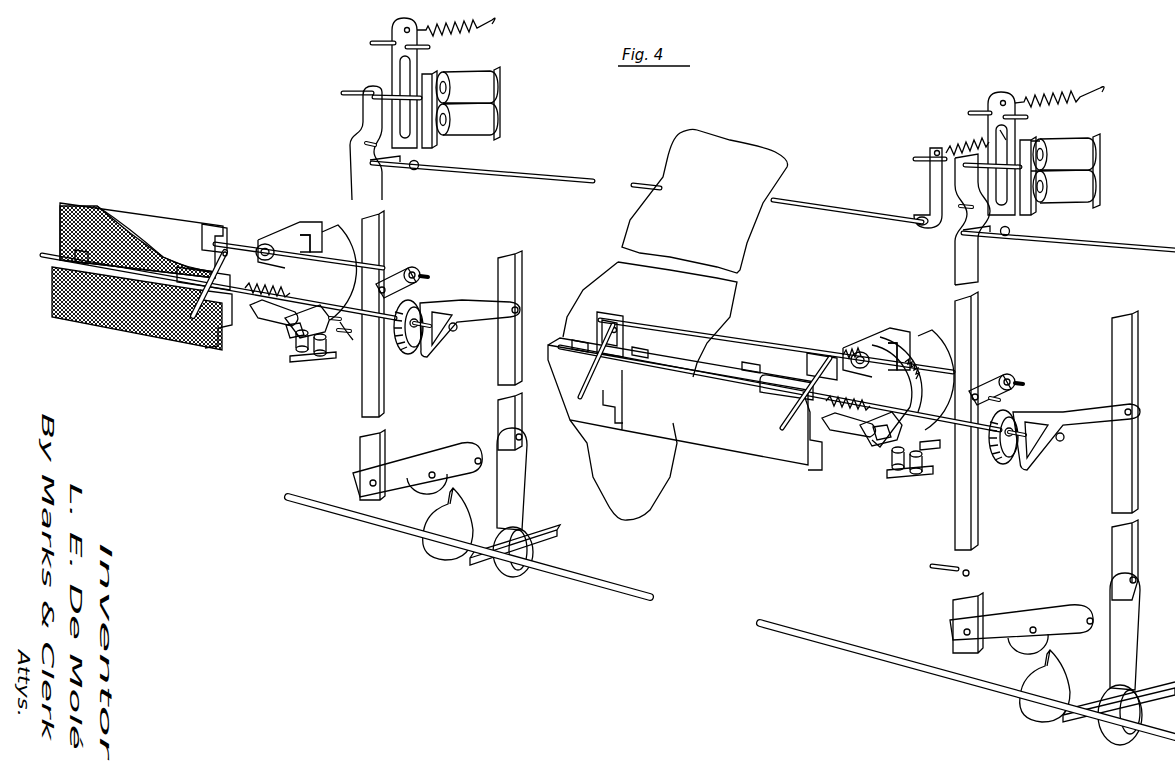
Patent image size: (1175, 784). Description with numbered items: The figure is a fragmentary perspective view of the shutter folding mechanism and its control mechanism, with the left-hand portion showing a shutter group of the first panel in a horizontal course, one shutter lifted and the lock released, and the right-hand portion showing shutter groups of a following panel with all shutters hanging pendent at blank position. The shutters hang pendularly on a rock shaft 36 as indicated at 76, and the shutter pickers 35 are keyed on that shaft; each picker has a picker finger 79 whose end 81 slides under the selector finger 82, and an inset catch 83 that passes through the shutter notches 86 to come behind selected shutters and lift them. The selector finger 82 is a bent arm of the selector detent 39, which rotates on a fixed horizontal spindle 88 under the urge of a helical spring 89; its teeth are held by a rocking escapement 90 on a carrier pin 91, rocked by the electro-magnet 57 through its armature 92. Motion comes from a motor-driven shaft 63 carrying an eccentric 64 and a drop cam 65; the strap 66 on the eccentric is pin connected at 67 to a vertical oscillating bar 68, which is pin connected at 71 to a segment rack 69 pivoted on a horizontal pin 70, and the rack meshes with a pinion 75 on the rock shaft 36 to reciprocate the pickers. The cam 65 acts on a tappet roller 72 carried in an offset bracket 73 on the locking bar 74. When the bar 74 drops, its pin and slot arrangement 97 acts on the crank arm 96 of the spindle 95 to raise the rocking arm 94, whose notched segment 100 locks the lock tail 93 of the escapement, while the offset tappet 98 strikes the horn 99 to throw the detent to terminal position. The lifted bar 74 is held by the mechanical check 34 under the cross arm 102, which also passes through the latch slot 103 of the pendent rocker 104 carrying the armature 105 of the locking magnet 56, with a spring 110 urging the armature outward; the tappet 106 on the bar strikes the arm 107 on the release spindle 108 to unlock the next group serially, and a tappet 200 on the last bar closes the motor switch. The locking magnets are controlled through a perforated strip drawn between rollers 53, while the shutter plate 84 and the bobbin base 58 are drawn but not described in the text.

The mechanical check 34 is at (930, 175).
The shutter picker 35 is at (213, 272).
The rock shaft 36 is at (262, 286).
The selector detent 39 is at (296, 340).
The rollers 53 is at (391, 228).
The locking magnet 56 is at (458, 78).
The electro-magnet 57 is at (312, 356).
The bobbin base 58 is at (940, 455).
The shaft 63 is at (305, 500).
The eccentric 64 is at (548, 545).
The drop cam 65 is at (445, 506).
The strap 66 is at (528, 536).
The pin connection 67 is at (524, 435).
The vertical oscillating bar 68 is at (505, 366).
The segment rack 69 is at (440, 308).
The horizontal pin 70 is at (456, 332).
The pin connection 71 is at (1134, 414).
The tappet roller 72 is at (425, 458).
The offset bracket 73 is at (372, 460).
The locking bar 74 is at (362, 418).
The pinion 75 is at (400, 352).
The pendular shutter hanging 76 is at (770, 385).
The picker finger 79 is at (236, 240).
The end of picker finger 81 is at (196, 322).
The selector finger 82 is at (258, 328).
The inset catch 83 is at (190, 266).
The plate 84 is at (158, 222).
The shutter notches 86 is at (238, 352).
The fixed horizontal spindle 88 is at (290, 330).
The helical spring 89 is at (852, 402).
The rocking escapement 90 is at (344, 338).
The carrier pin 91 is at (353, 328).
The armature 92 is at (330, 325).
The lock tail 93 is at (334, 232).
The rocking arm 94 is at (285, 230).
The spindle 95 is at (252, 245).
The crank arm 96 is at (411, 270).
The pin and slot arrangement 97 is at (995, 400).
The offset tappet 98 is at (880, 325).
The horn 99 is at (862, 345).
The notched segment 100 is at (310, 222).
The cross arm 102 is at (343, 95).
The latch slot 103 is at (1010, 135).
The pendent rocker 104 is at (390, 53).
The armature 105 is at (434, 143).
The tappet 106 is at (958, 205).
The arm 107 is at (413, 168).
The release spindle 108 is at (506, 173).
The spring 110 is at (1044, 150).
The tappet 200 is at (932, 573).